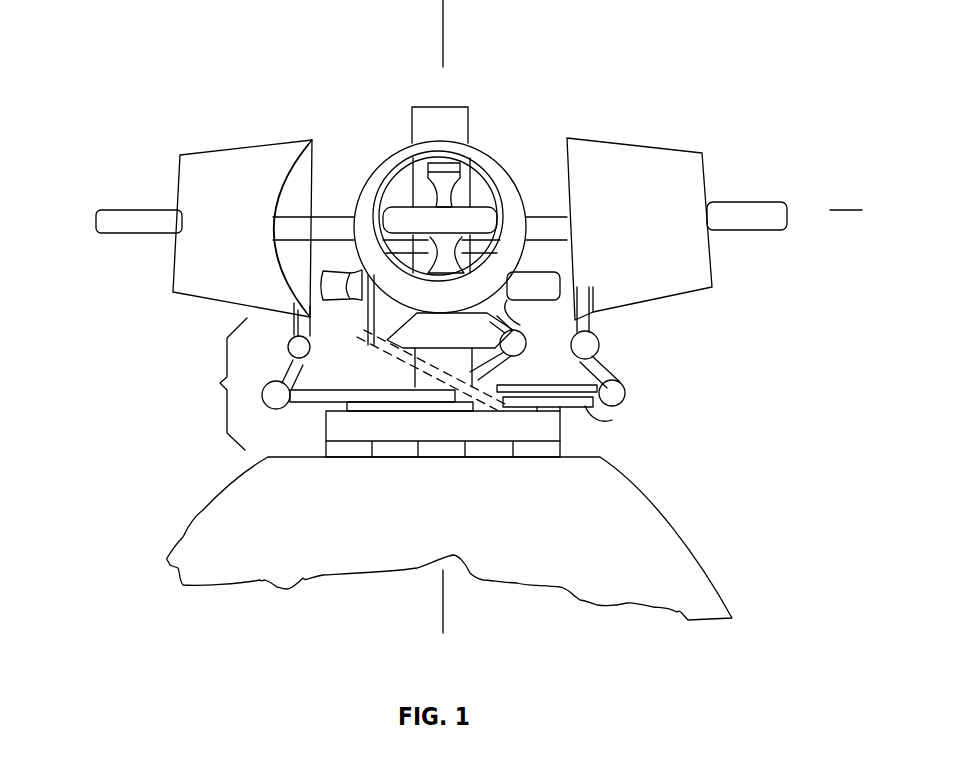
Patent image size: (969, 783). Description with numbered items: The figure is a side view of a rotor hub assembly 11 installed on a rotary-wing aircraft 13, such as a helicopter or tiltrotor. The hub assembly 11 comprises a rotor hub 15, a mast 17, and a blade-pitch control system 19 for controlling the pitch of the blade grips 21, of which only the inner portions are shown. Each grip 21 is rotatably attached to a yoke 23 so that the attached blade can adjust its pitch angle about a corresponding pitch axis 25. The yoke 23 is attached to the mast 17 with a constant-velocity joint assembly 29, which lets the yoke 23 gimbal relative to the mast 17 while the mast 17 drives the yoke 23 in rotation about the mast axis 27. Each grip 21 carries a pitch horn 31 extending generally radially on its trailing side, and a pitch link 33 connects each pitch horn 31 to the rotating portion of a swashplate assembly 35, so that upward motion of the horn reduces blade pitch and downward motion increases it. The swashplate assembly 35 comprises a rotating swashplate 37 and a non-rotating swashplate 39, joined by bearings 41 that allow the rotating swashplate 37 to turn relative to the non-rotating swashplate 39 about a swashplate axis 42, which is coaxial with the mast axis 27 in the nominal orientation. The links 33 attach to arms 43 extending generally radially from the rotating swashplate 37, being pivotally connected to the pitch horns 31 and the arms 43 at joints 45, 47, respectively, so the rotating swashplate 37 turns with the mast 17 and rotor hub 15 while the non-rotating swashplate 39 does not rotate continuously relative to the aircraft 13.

The rotor hub assembly 11 is at (594, 93).
The rotary-wing aircraft 13 is at (203, 510).
The rotor hub 15 is at (540, 200).
The mast 17 is at (412, 130).
The blade-pitch control system 19 is at (251, 376).
The blade grip 21 is at (672, 165).
The yoke 23 is at (130, 212).
The pitch axis 25 is at (853, 208).
The mast axis 27 is at (443, 24).
The constant-velocity joint assembly 29 is at (538, 302).
The pitch horn 31 is at (383, 317).
The pitch link 33 is at (397, 353).
The swashplate assembly 35 is at (310, 412).
The rotating swashplate 37 is at (598, 406).
The non-rotating swashplate 39 is at (562, 422).
The bearings 41 is at (520, 404).
The swashplate axis 42 is at (443, 580).
The arm 43 is at (567, 387).
The joint 45 is at (598, 345).
The joint 47 is at (620, 390).